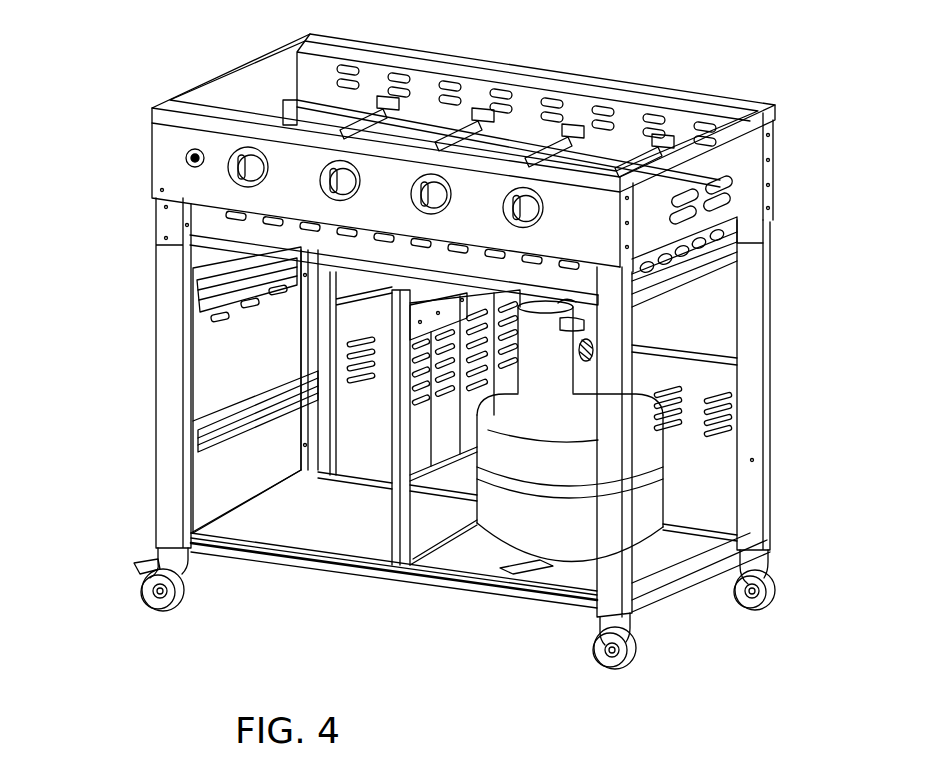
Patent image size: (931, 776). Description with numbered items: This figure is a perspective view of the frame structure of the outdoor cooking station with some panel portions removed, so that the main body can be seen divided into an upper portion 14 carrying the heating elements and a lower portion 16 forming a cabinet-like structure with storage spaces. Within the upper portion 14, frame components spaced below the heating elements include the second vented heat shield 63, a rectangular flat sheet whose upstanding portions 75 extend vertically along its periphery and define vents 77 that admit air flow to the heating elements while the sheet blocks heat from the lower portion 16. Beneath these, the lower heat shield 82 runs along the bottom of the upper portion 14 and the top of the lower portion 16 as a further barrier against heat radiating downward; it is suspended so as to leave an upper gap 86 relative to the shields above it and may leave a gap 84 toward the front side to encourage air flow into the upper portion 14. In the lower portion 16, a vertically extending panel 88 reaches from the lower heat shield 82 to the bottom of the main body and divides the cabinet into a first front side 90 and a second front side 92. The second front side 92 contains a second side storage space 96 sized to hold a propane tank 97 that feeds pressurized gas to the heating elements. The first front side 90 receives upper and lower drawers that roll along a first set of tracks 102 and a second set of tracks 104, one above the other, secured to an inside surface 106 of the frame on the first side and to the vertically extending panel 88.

The upper portion 14 is at (92, 108).
The lower portion 16 is at (92, 240).
The second vented heat shield 63 is at (733, 284).
The upstanding portions 75 is at (678, 268).
The vents 77 is at (645, 272).
The lower heat shield 82 is at (333, 253).
The gap 84 is at (213, 237).
The upper gap 86 is at (742, 232).
The vertically extending panel 88 is at (411, 500).
The first front side 90 is at (256, 578).
The second front side 92 is at (521, 612).
The second side storage space 96 is at (456, 562).
The propane tank 97 is at (657, 494).
The first set of tracks 102 is at (234, 316).
The second set of tracks 104 is at (263, 446).
The inside surface 106 is at (208, 396).